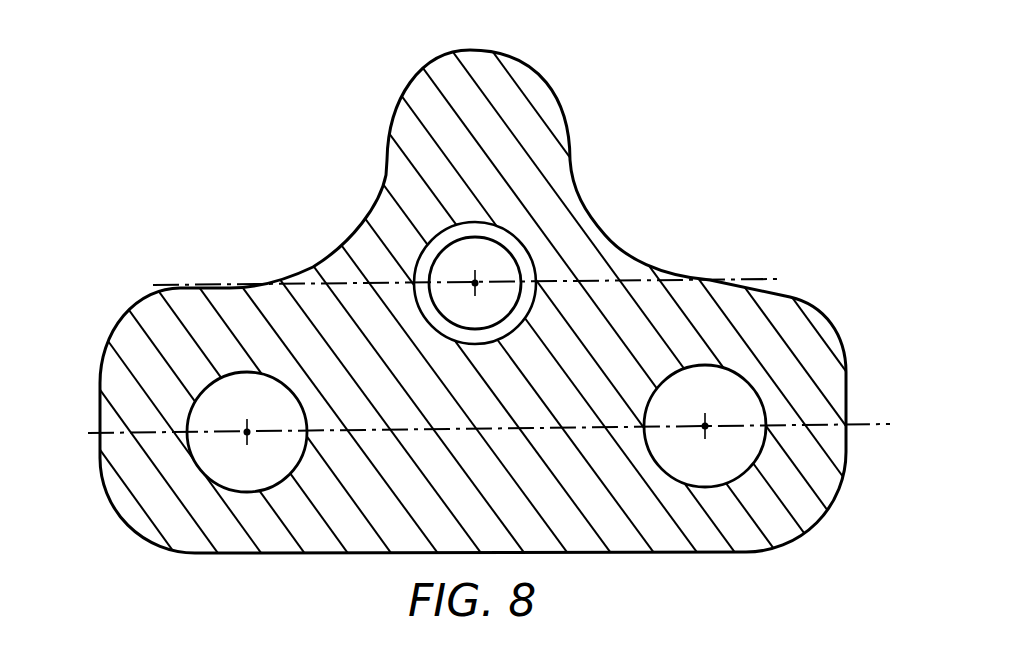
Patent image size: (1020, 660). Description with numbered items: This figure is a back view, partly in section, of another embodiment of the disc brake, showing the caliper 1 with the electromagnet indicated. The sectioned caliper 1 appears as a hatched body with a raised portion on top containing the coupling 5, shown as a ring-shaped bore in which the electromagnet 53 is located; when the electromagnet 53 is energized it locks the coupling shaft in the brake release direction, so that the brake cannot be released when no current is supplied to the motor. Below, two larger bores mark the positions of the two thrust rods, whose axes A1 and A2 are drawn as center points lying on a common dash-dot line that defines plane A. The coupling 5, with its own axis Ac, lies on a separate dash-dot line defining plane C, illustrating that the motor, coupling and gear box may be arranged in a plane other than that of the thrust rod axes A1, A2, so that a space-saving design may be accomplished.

The caliper 1 is at (233, 535).
The electromagnet 53 is at (500, 236).
The coupling 5 is at (536, 271).
The central bore axis Ac is at (475, 283).
The axis of first thrust rod A1 is at (246, 432).
The axis of second thrust rod A2 is at (705, 426).
The plane A is at (498, 424).
The plane C is at (481, 284).